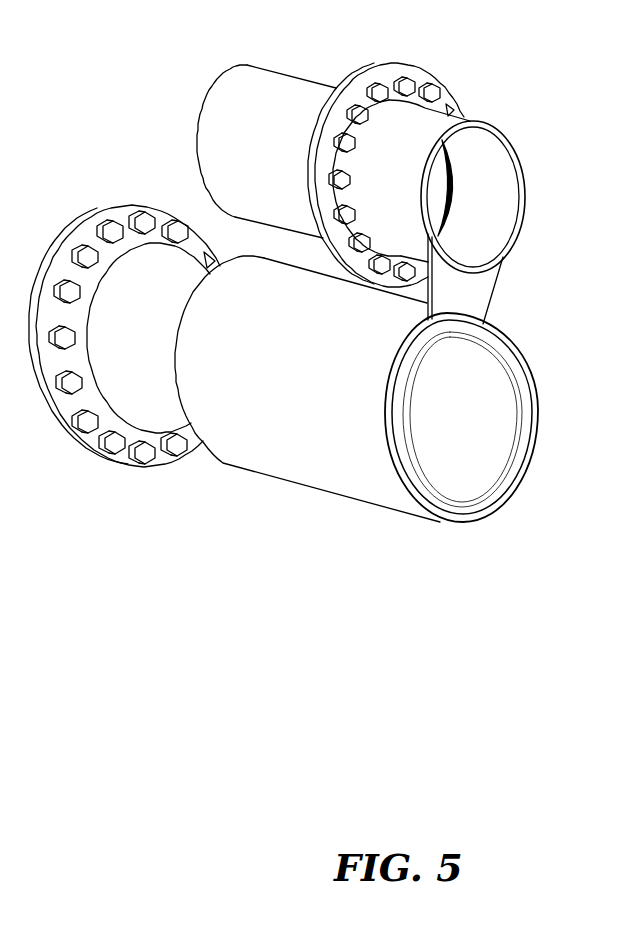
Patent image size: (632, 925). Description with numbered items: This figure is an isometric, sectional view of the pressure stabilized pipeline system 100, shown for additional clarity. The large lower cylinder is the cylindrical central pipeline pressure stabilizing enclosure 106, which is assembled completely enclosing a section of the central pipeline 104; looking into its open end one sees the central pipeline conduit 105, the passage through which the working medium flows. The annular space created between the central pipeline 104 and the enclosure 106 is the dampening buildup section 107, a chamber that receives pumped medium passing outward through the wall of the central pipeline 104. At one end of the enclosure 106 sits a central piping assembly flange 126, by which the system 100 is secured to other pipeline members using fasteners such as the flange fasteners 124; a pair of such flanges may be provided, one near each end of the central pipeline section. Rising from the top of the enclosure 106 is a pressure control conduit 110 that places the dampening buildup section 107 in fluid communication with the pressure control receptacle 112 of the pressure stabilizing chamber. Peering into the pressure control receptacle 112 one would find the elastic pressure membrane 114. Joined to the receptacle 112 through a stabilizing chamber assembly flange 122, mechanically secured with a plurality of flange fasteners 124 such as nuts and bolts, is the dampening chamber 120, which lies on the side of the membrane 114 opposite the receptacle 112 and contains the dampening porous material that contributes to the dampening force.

The pressure stabilized pipeline system 100 is at (382, 564).
The central pipeline 104 is at (520, 436).
The central pipeline conduit 105 is at (462, 400).
The cylindrical central pipeline pressure stabilizing enclosure 106 is at (528, 467).
The dampening buildup section 107 is at (505, 490).
The pressure control conduit 110 is at (472, 287).
The pressure control receptacle 112 is at (513, 210).
The elastic pressure membrane 114 is at (436, 172).
The dampening chamber 120 is at (221, 114).
The stabilizing chamber assembly flange 122 is at (428, 80).
The flange fastener 124 is at (438, 93).
The central piping assembly flange 126 is at (145, 464).